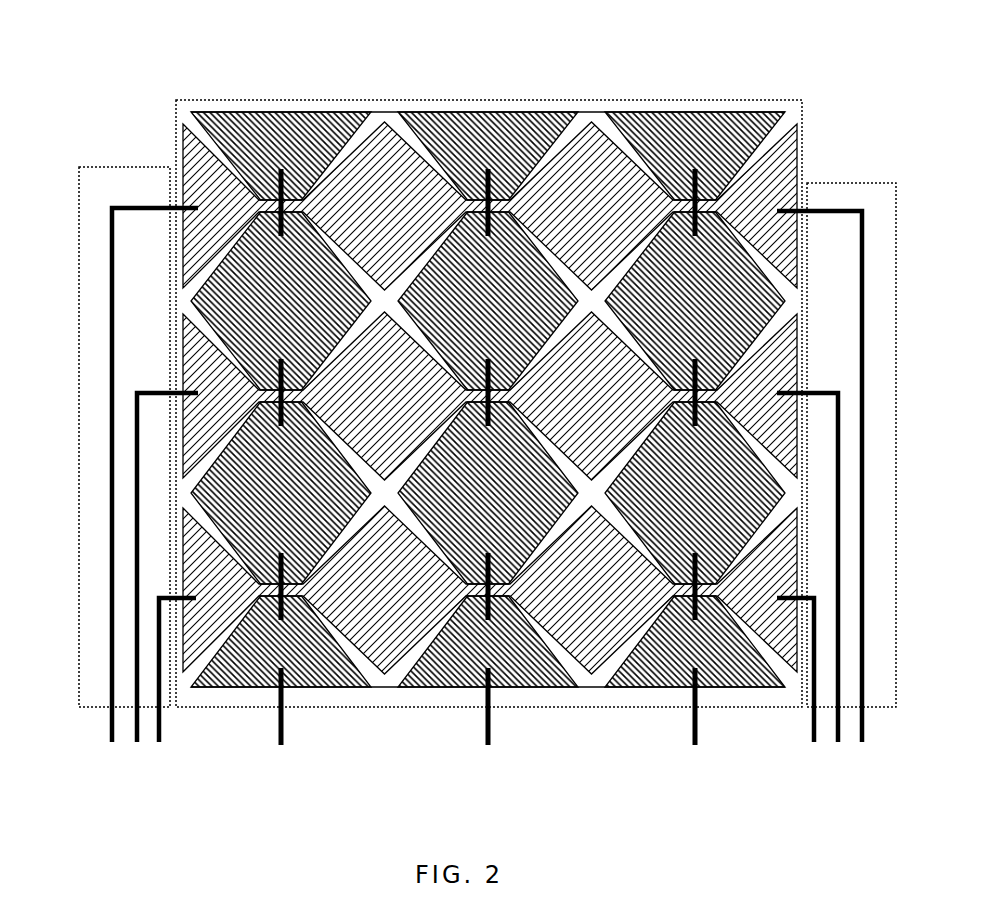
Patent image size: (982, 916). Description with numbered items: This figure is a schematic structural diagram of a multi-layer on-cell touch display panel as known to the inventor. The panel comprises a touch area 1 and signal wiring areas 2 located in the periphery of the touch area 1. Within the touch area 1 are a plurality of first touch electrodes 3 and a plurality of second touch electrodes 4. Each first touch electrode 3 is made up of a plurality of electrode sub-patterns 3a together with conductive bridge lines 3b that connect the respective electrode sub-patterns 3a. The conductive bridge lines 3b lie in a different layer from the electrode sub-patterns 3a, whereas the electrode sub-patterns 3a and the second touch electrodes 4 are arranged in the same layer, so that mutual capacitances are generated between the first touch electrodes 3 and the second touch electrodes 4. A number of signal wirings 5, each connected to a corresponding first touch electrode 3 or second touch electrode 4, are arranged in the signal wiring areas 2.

The touch area 1 is at (651, 99).
The signal wiring area 2 is at (125, 166).
The first touch electrode 3 is at (488, 376).
The electrode sub-pattern 3a is at (257, 127).
The conductive bridge line 3b is at (286, 160).
The second touch electrode 4 is at (201, 152).
The signal wiring 5 is at (98, 353).